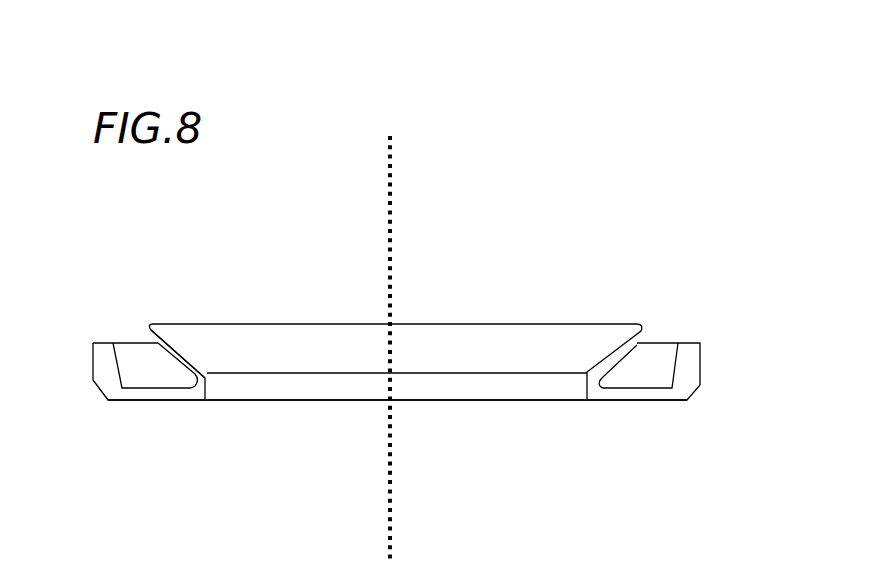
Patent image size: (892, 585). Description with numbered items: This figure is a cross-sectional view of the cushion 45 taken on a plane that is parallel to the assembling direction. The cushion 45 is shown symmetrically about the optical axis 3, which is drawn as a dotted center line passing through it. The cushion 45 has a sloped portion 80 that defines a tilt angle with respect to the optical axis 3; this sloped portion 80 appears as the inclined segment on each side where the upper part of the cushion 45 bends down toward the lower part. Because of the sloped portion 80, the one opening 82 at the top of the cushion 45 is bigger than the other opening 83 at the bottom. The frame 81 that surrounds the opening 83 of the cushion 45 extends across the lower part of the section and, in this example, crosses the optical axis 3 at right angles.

The optical axis 3 is at (390, 180).
The cushion 45 is at (616, 283).
The sloped portion 80 is at (173, 341).
The frame 81 is at (168, 400).
The one opening 82 is at (553, 324).
The other opening 83 is at (548, 400).